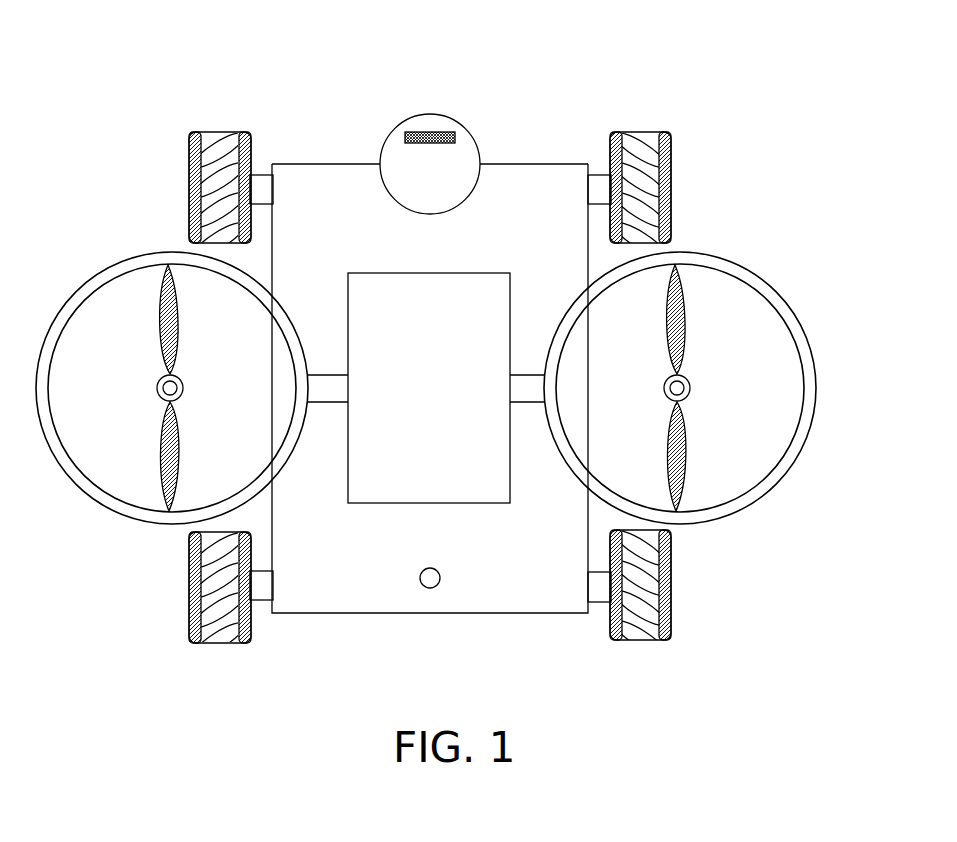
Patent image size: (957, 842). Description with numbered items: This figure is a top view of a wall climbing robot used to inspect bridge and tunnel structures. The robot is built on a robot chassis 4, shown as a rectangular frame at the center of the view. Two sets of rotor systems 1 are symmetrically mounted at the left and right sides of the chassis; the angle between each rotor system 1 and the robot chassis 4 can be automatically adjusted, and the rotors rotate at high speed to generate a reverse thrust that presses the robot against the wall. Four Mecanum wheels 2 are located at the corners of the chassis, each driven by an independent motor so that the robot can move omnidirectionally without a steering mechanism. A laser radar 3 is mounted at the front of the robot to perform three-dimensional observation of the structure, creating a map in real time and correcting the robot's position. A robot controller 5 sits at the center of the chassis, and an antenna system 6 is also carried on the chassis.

The rotor system 1 is at (725, 323).
The Mecanum wheel 2 is at (640, 188).
The laser radar 3 is at (457, 160).
The robot chassis 4 is at (295, 180).
The robot controller 5 is at (445, 448).
The antenna system 6 is at (437, 585).